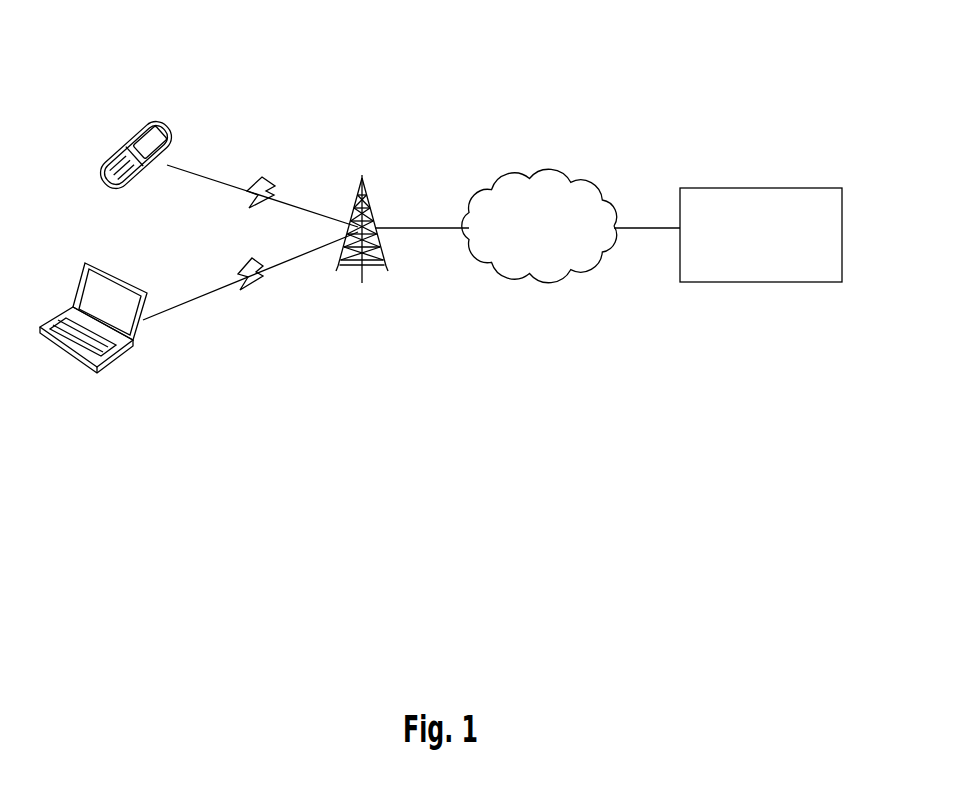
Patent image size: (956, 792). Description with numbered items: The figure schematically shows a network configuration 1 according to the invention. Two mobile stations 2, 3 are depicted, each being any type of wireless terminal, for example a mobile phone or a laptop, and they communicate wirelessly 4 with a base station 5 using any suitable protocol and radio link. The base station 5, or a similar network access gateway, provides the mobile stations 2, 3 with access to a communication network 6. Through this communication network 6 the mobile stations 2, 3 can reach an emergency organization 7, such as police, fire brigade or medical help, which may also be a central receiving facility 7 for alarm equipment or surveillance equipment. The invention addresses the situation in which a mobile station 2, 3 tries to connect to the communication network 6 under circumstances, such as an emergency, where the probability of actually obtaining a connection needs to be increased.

The network configuration 1 is at (448, 150).
The mobile station 2 is at (157, 125).
The mobile station 3 is at (133, 342).
The wireless communication 4 is at (223, 177).
The base station 5 is at (377, 277).
The communication network 6 is at (543, 276).
The emergency organization 7 is at (785, 282).